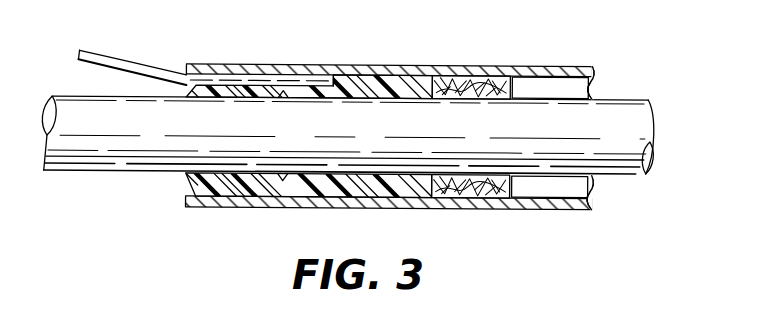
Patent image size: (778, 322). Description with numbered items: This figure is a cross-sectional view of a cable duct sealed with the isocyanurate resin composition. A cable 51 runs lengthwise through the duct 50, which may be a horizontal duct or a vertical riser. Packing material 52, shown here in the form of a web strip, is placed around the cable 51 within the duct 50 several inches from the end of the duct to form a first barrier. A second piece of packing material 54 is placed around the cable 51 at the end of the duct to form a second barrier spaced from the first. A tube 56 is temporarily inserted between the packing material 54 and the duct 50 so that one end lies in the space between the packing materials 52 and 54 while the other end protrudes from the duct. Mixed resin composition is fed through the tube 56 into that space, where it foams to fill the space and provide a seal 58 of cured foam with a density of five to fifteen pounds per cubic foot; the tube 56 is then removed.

The cable duct 50 is at (552, 66).
The cable 51 is at (627, 110).
The packing material 52 is at (462, 83).
The packing material 54 is at (186, 184).
The tube 56 is at (120, 66).
The seal 58 is at (386, 78).